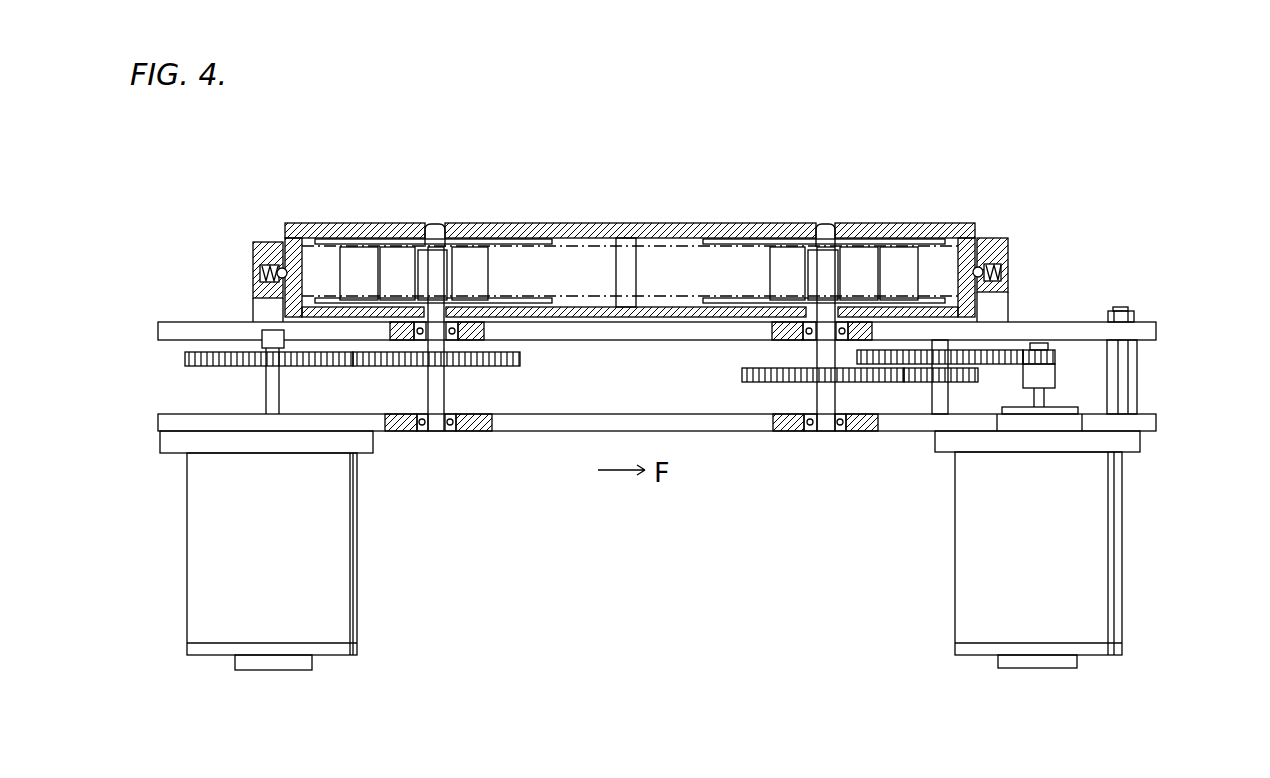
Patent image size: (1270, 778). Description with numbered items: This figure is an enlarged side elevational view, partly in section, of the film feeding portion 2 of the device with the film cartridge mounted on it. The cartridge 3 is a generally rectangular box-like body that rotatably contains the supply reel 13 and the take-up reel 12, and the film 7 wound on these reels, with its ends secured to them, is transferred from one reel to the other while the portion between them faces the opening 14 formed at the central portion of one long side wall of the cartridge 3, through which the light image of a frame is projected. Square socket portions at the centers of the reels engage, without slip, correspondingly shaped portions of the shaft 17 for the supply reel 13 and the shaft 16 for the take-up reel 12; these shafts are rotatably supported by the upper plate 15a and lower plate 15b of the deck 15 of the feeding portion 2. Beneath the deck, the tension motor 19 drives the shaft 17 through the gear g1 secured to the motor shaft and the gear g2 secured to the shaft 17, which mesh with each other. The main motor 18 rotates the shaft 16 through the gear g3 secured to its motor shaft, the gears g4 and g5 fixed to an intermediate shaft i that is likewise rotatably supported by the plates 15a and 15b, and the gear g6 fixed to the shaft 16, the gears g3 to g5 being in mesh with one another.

The feeding portion 2 is at (1232, 308).
The cartridge 3 is at (743, 223).
The film 7 is at (672, 296).
The take-up reel 12 is at (951, 223).
The supply reel 13 is at (538, 239).
The opening 14 is at (626, 257).
The deck 15 is at (1048, 322).
The upper plate 15a is at (1095, 330).
The lower plate 15b is at (1145, 424).
The shaft 16 is at (817, 353).
The shaft 17 is at (447, 387).
The main motor 18 is at (1102, 572).
The tension motor 19 is at (358, 570).
The gear g1 is at (308, 364).
The gear g2 is at (497, 364).
The gear g3 is at (1055, 364).
The gear g4 is at (993, 364).
The gear g5 is at (927, 382).
The gear g6 is at (770, 382).
The intermediate shaft i is at (940, 400).